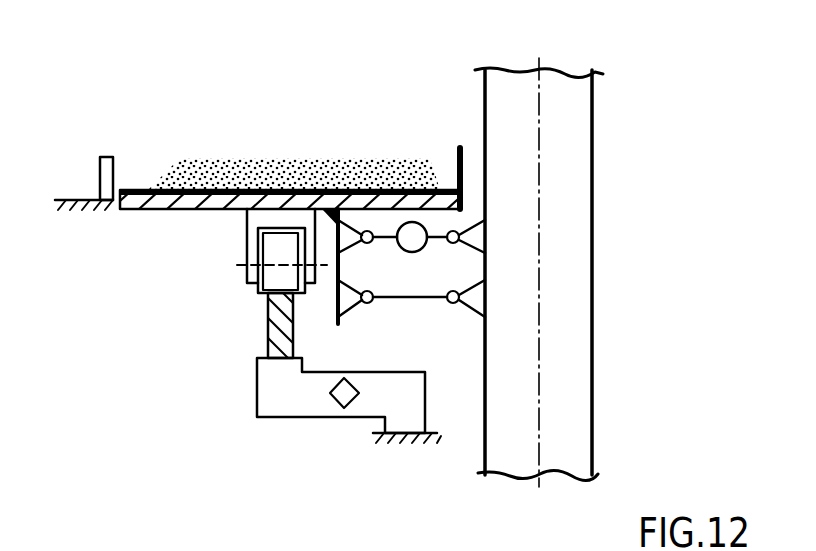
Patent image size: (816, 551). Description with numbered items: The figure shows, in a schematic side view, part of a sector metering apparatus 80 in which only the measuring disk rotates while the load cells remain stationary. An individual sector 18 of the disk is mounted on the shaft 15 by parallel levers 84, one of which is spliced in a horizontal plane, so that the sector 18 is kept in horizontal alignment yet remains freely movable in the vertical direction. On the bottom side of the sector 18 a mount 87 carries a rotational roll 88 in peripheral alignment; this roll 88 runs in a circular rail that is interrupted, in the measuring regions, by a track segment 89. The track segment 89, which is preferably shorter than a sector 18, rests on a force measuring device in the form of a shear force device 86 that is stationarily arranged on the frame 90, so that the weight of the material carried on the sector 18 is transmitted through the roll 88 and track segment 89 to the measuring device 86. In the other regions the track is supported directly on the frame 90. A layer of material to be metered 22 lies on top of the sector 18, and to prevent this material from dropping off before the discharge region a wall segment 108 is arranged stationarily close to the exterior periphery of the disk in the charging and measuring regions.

The shaft 15 is at (582, 264).
The sector 18 is at (167, 204).
The powder layer 22 is at (278, 167).
The sector metering apparatus 80 is at (175, 125).
The parallel levers 84 is at (393, 278).
The shear force device 86 is at (268, 393).
The mount 87 is at (250, 238).
The rotational roll 88 is at (265, 285).
The track segment 89 is at (272, 327).
The frame 90 is at (380, 443).
The wall segment 108 is at (100, 164).